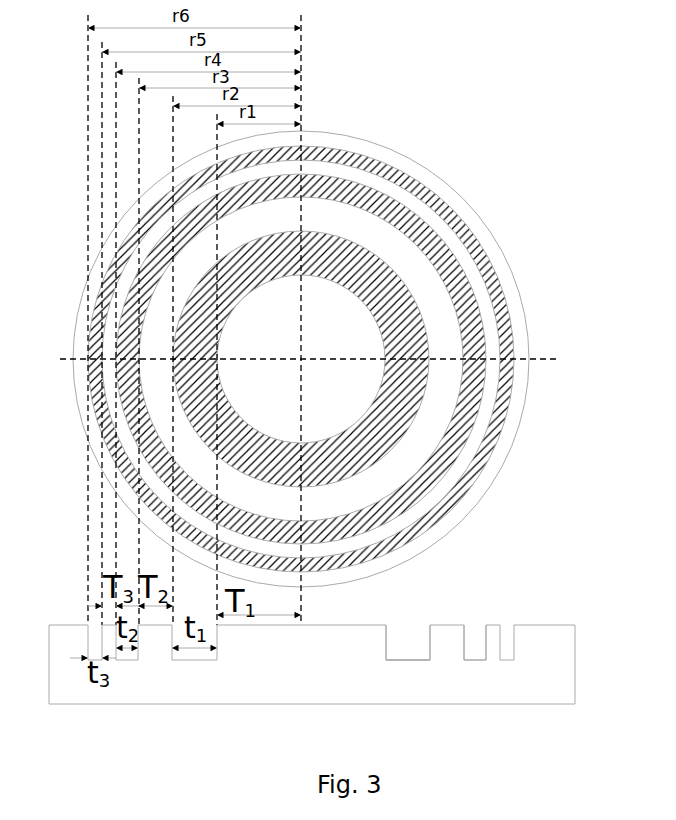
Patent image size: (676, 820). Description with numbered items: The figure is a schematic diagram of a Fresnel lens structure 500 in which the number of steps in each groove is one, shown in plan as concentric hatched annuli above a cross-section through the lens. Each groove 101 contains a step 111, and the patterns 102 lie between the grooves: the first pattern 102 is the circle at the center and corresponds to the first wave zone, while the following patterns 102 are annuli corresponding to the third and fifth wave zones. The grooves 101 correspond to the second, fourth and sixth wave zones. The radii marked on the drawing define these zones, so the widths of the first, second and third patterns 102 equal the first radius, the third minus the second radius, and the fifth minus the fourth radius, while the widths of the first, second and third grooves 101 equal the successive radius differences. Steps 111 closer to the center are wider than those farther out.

The annular grating structure 500 is at (515, 278).
The groove 101 is at (412, 652).
The pattern 102 is at (325, 627).
The step 111 is at (395, 662).